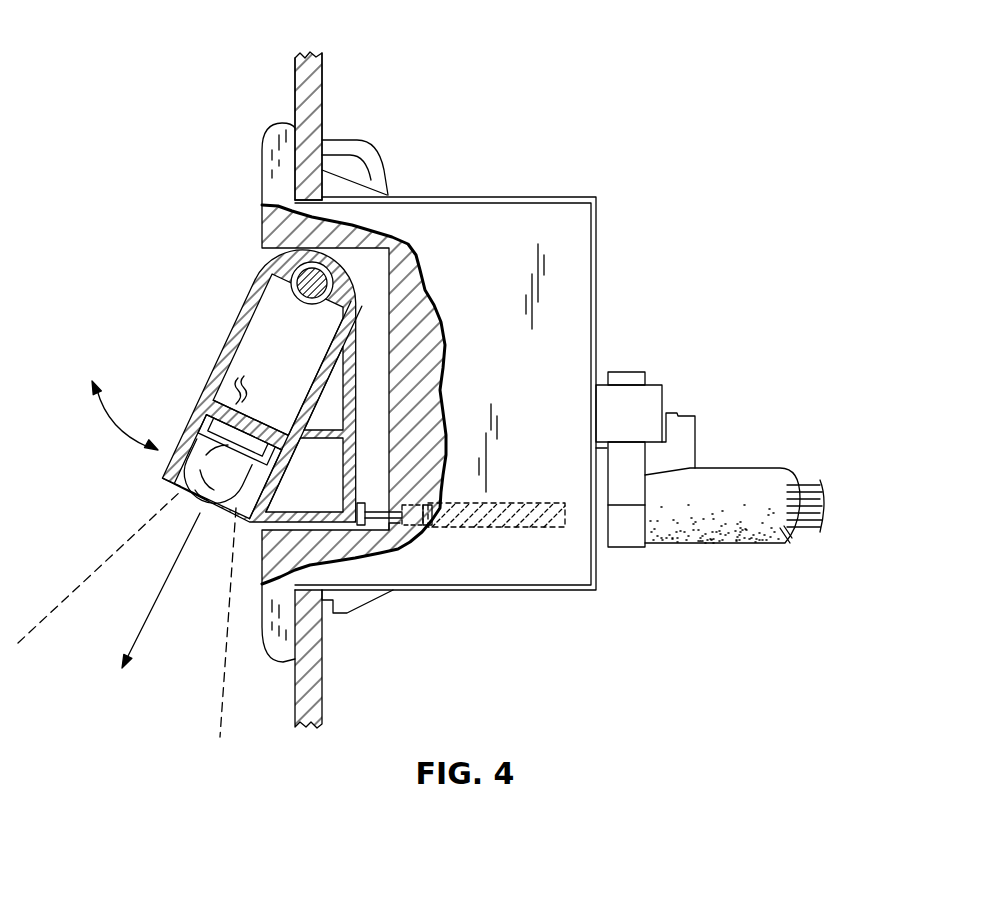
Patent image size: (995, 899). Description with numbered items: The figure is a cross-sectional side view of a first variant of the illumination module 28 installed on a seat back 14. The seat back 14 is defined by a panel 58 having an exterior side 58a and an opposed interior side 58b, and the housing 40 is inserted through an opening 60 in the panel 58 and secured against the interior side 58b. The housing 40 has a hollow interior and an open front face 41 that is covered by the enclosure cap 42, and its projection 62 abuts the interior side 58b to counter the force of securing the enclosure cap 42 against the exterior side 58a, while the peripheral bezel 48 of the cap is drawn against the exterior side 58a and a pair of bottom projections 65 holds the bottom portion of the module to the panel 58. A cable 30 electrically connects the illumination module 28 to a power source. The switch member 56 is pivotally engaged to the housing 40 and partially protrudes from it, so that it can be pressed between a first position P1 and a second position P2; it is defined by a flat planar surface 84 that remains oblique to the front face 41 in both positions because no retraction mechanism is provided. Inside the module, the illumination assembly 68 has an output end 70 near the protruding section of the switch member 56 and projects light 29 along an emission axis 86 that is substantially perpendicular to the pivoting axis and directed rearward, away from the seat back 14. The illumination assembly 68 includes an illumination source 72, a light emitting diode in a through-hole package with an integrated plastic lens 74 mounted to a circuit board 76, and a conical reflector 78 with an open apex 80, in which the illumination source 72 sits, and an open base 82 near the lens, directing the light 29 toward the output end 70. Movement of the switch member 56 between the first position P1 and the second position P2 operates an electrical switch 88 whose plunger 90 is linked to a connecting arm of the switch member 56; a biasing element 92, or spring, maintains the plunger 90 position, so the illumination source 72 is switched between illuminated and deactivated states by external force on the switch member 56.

The seat back 14 is at (304, 62).
The panel 58 is at (342, 367).
The exterior side 58a is at (295, 76).
The interior side 58b is at (322, 87).
The illumination module 28 is at (532, 82).
The opening 60 is at (305, 185).
The enclosure cap 42 is at (276, 172).
The projection 62 is at (374, 156).
The housing 40 is at (428, 202).
The front face 41 is at (252, 230).
The flat planar surface 84 is at (251, 301).
The switch member 56 is at (229, 339).
The circuit board 76 is at (214, 398).
The illumination assembly 68 is at (185, 410).
The illumination source 72 is at (222, 452).
The output end 70 is at (190, 505).
The lens 74 is at (208, 505).
The reflector 78 is at (170, 488).
The open apex 80 is at (262, 474).
The peripheral bezel 48 is at (270, 645).
The bottom projections 65 is at (343, 618).
The plunger 90 is at (396, 524).
The electrical switch 88 is at (462, 527).
The biasing element 92 is at (507, 527).
The cable 30 is at (705, 546).
The light 29 is at (65, 600).
The emission axis 86 is at (157, 611).
The open base 82 is at (242, 532).
The first position P1 is at (108, 415).
The second position P2 is at (128, 468).